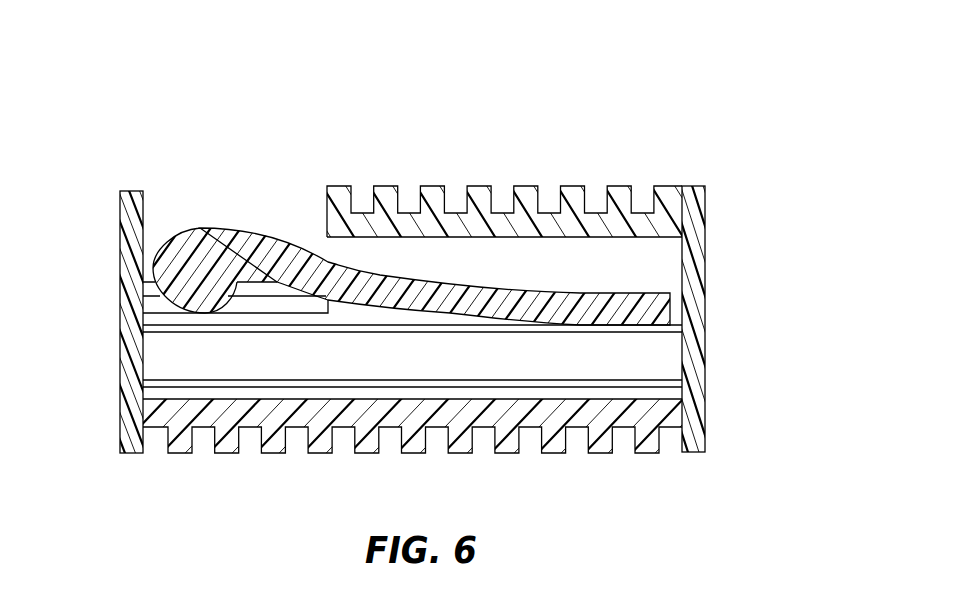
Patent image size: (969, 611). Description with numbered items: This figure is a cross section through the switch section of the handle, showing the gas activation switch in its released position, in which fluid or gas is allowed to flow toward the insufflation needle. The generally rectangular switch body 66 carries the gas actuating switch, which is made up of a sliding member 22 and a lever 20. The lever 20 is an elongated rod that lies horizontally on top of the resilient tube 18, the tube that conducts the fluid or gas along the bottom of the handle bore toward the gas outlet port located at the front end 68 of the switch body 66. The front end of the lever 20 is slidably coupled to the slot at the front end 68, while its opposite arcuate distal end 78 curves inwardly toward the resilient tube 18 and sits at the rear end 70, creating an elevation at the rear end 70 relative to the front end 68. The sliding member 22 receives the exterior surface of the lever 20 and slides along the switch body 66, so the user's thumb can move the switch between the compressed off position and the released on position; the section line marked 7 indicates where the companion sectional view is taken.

The switch body 66 is at (698, 116).
The lever 20 is at (227, 205).
The sliding member 22 is at (546, 176).
The rear end 70 is at (120, 205).
The front end 68 is at (705, 257).
The arcuate distal end 78 is at (142, 301).
The resilient tube 18 is at (180, 353).
The section line 7- 7 is at (310, 159).